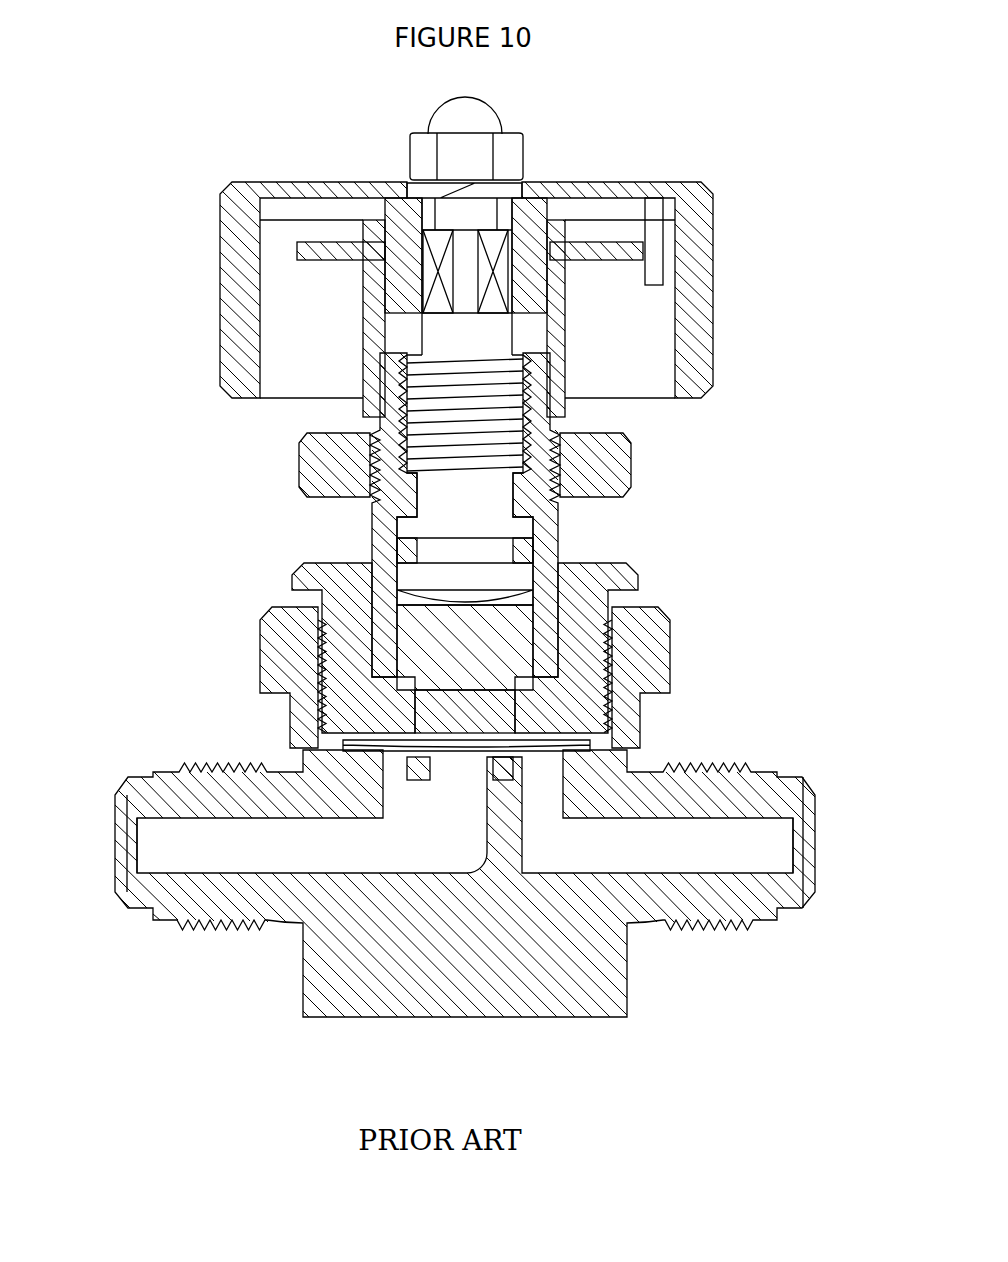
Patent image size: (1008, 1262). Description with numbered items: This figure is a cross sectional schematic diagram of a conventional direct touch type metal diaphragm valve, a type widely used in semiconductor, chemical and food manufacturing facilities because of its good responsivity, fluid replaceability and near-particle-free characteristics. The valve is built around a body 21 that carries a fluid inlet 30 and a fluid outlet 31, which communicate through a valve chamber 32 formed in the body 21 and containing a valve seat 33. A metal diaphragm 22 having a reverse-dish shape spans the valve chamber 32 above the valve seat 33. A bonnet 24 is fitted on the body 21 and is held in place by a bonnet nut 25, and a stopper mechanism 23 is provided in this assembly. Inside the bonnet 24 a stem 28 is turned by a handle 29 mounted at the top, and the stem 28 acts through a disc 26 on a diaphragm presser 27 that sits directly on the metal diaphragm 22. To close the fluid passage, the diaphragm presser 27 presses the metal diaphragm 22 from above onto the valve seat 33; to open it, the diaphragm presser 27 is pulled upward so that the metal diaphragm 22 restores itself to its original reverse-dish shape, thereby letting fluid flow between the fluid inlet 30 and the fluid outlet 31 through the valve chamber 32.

The body 21 is at (470, 955).
The metal diaphragm 22 is at (535, 762).
The stopper mechanism 23 is at (345, 743).
The bonnet 24 is at (560, 582).
The bonnet nut 25 is at (645, 648).
The disc 26 is at (420, 630).
The diaphragm presser 27 is at (432, 668).
The stem 28 is at (373, 513).
The handle 29 is at (695, 320).
The fluid inlet 30 is at (157, 843).
The fluid outlet 31 is at (770, 845).
The valve chamber 32 is at (387, 762).
The valve seat 33 is at (433, 762).